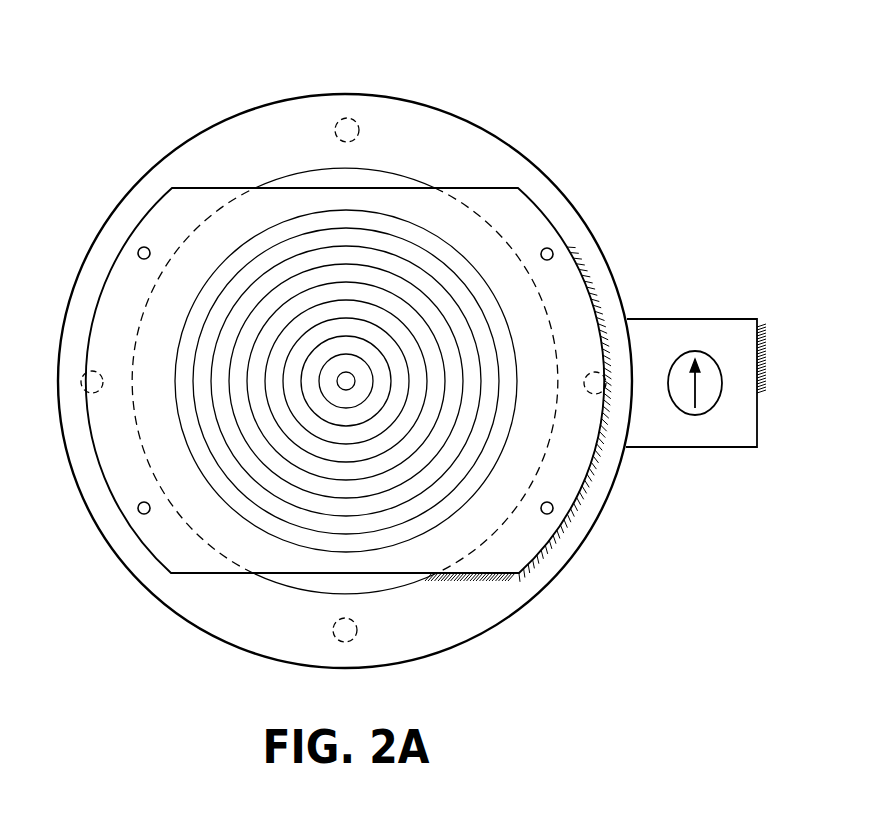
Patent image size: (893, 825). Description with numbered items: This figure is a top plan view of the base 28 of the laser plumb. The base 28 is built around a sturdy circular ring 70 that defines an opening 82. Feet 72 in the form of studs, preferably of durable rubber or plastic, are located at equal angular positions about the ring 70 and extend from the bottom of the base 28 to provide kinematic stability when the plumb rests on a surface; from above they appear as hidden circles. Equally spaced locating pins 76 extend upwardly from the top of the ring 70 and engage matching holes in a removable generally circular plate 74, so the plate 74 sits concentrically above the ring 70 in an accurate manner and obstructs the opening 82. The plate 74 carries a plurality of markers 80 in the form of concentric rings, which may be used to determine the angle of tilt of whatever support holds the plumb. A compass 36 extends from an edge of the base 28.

The base 28 is at (575, 82).
The circular ring 70 is at (253, 133).
The feet 72 is at (335, 125).
The circular plate 74 is at (172, 213).
The locating pins 76 is at (551, 249).
The markers 80 is at (515, 418).
The opening 82 is at (392, 173).
The compass 36 is at (743, 315).